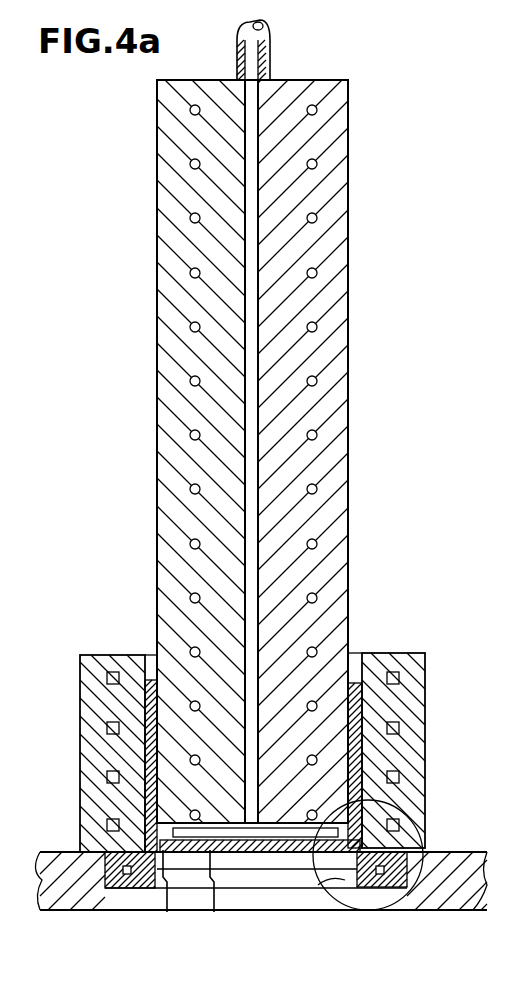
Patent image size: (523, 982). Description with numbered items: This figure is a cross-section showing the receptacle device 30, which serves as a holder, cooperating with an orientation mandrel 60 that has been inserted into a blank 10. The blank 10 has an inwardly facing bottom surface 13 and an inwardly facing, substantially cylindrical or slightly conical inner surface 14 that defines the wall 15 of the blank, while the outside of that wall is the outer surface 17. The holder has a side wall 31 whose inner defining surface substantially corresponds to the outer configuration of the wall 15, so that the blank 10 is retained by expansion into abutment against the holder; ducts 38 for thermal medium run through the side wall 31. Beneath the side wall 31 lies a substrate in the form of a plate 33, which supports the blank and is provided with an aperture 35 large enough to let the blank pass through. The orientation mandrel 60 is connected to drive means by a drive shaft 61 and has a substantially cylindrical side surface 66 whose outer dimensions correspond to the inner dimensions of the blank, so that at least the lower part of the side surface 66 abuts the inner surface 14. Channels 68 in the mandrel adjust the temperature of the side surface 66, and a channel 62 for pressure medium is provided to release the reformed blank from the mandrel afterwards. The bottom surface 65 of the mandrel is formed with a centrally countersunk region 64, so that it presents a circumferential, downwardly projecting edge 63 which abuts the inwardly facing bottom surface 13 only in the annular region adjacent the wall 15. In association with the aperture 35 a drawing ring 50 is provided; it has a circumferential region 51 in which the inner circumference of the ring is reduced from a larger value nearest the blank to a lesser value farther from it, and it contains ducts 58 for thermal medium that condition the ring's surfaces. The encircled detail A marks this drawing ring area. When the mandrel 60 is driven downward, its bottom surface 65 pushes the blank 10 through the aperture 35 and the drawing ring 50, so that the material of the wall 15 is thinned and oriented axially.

The drive shaft 61 is at (270, 46).
The channels 68 is at (318, 163).
The channel for pressure medium 62 is at (258, 193).
The orientation mandrel 60 is at (327, 249).
The side surface 66 is at (348, 357).
The receptacle device 30 is at (434, 679).
The ducts for thermal medium 38 is at (107, 727).
The blank 10 is at (138, 755).
The side wall 31 is at (97, 800).
The wall 15 is at (375, 757).
The outer surface 17 is at (355, 738).
The inner surface 14 is at (346, 766).
The inwardly facing bottom surface 13 is at (278, 828).
The centrally countersunk region 64 is at (242, 852).
The aperture 35 is at (267, 900).
The substrate plate 33 is at (45, 912).
The ducts for thermal medium 58 is at (105, 893).
The downwardly projecting edge 63 is at (167, 912).
The bottom surface 65 is at (214, 912).
The circumferential region 51 is at (315, 885).
The detail circle A is at (326, 912).
The drawing ring 50 is at (412, 905).